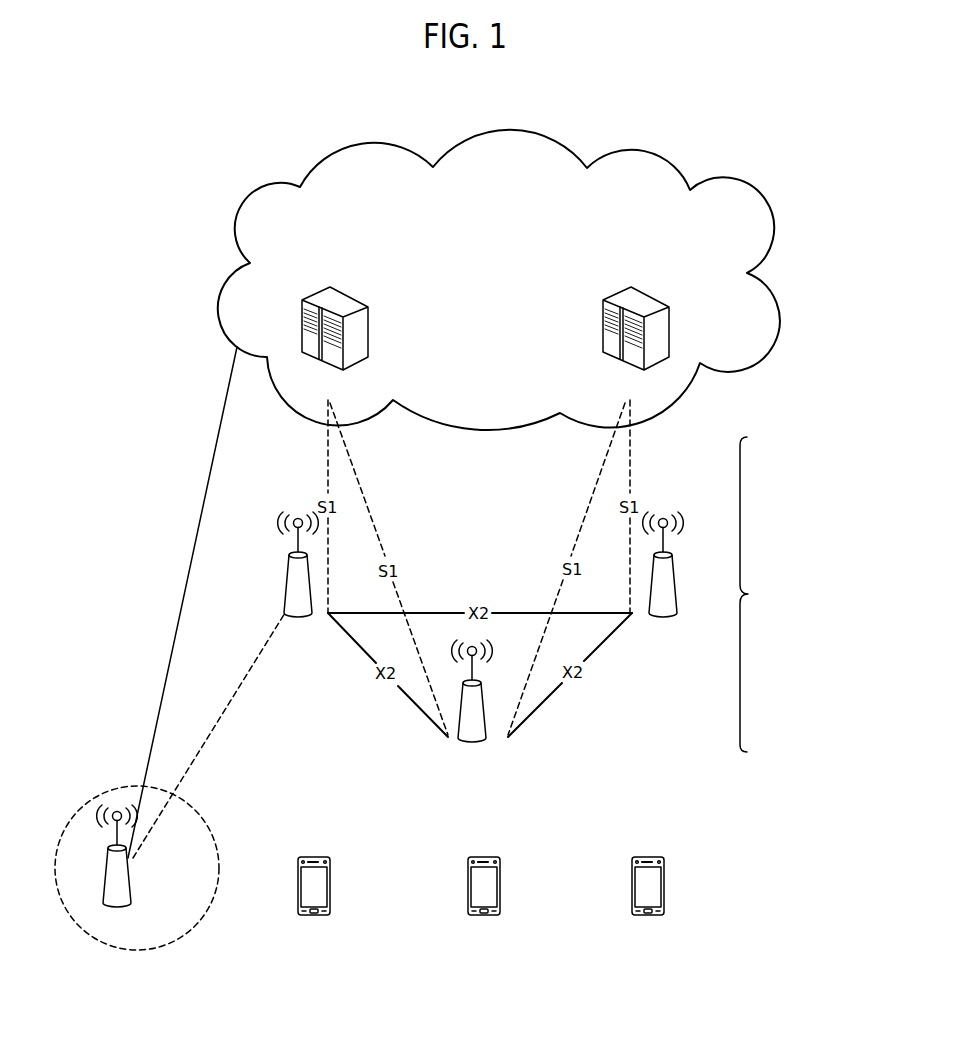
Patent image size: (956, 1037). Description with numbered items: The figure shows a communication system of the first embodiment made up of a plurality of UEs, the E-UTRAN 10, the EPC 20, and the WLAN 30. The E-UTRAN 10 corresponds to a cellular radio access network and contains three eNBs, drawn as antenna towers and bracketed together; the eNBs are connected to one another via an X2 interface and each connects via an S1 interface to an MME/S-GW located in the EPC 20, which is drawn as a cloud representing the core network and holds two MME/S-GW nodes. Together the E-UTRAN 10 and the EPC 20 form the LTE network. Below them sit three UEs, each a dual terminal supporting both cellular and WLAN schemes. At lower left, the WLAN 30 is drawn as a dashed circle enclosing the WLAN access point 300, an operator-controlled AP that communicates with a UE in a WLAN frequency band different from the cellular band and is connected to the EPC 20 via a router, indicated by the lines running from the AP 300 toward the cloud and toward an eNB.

The E-UTRAN 10 is at (786, 594).
The EPC 20 is at (674, 160).
The WLAN 30 is at (186, 933).
The WLAN access point 300 is at (130, 881).